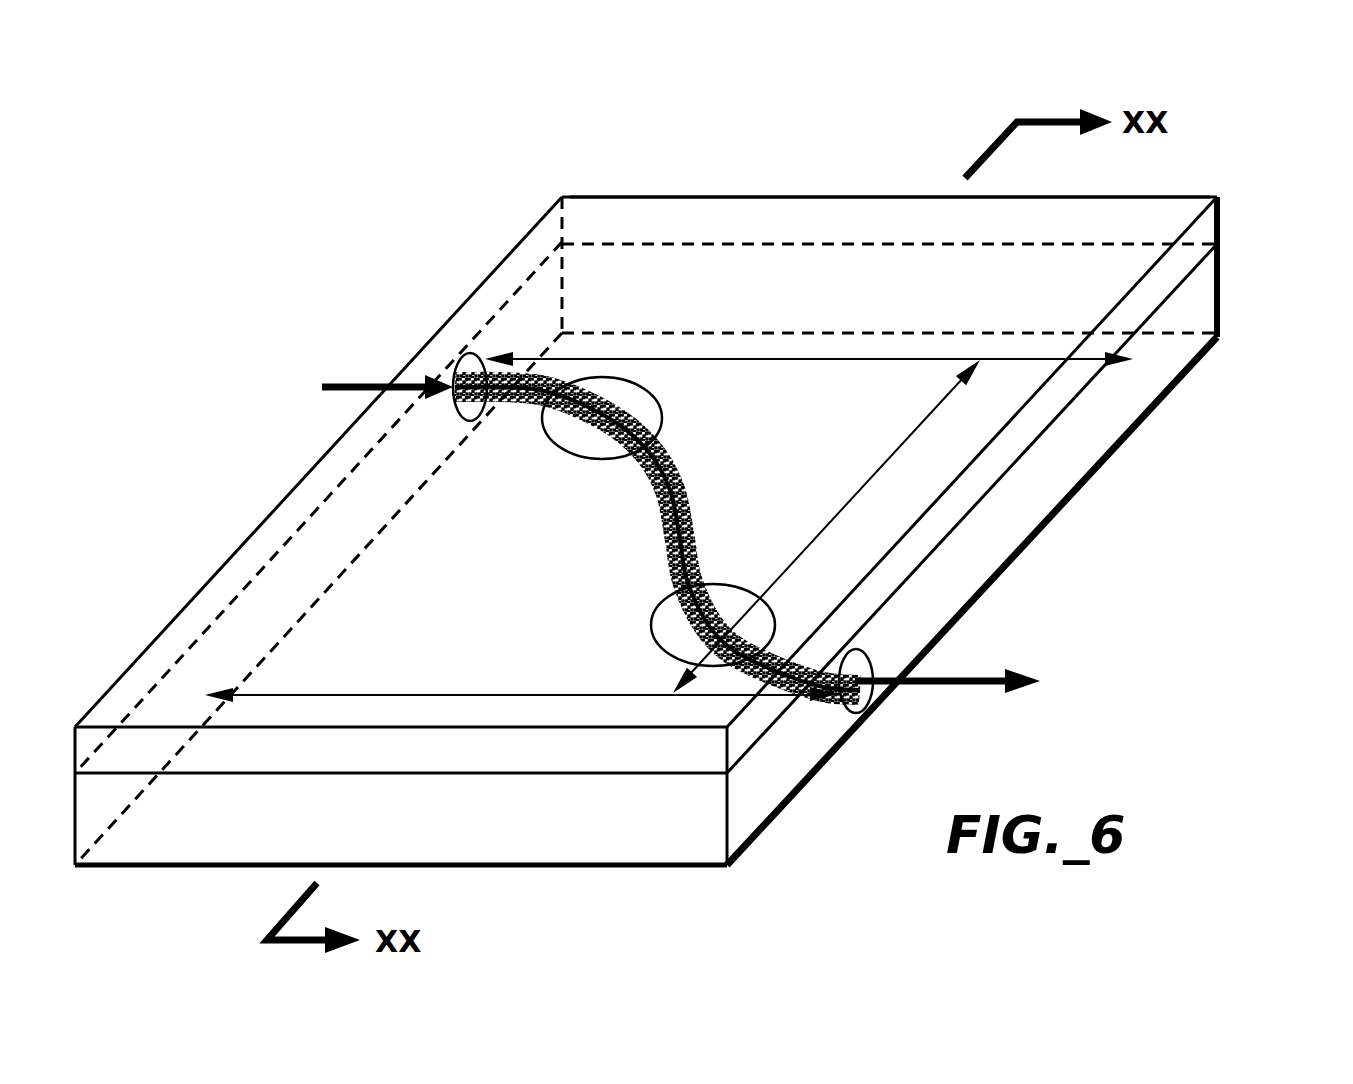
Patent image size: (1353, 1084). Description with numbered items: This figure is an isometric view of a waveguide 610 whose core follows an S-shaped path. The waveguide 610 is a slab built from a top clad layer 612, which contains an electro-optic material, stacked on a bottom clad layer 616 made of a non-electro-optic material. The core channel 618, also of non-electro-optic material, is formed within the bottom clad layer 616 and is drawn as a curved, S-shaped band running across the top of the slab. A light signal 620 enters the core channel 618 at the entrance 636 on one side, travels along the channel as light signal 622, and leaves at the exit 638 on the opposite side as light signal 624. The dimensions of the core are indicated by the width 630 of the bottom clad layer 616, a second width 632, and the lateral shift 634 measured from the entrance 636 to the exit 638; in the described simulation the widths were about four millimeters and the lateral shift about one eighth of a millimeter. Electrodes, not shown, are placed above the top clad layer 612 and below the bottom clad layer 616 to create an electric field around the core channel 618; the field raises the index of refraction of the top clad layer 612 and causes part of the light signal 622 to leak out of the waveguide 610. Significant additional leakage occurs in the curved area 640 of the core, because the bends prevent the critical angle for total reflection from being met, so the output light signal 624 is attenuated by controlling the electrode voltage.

The waveguide 610 is at (712, 458).
The top clad layer 612 is at (1130, 215).
The bottom clad layer 616 is at (752, 268).
The core channel 618 is at (675, 475).
The light signal 620 is at (352, 385).
The light signal 622 is at (655, 508).
The light signal 624 is at (963, 677).
The width 630 is at (828, 362).
The width 632 is at (410, 693).
The lateral shift 634 is at (882, 468).
The entrance 636 is at (465, 352).
The exit 638 is at (870, 656).
The curved area 640 is at (552, 448).